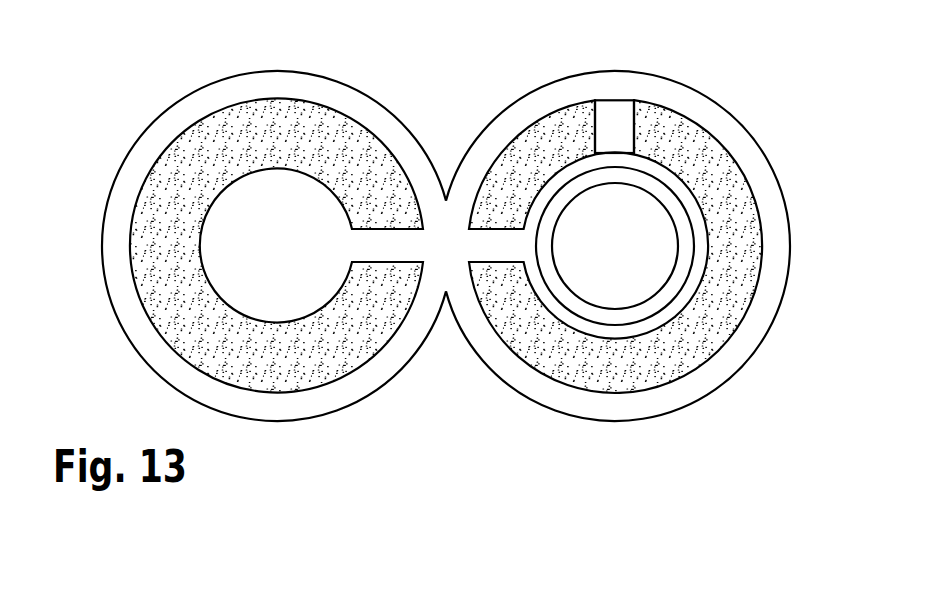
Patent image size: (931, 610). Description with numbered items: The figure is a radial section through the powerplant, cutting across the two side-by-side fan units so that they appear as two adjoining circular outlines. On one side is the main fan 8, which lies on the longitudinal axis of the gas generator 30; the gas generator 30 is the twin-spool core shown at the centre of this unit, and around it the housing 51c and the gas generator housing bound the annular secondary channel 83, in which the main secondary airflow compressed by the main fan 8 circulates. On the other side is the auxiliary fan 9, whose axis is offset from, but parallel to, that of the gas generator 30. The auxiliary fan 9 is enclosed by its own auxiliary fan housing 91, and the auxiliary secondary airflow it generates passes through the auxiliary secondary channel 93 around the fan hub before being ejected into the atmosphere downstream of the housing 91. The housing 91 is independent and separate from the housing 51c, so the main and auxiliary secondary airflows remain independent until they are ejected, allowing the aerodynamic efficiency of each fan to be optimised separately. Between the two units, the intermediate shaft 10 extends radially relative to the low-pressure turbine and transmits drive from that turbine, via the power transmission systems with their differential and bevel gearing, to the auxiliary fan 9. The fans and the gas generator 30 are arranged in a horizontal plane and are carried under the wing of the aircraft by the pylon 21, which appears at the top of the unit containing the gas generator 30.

The main fan 8 is at (725, 395).
The auxiliary fan 9 is at (338, 422).
The intermediate shaft 10 is at (442, 245).
The pylon 21 is at (620, 117).
The gas generator 30 is at (622, 232).
The housing 51c is at (593, 400).
The secondary channel 83 is at (673, 128).
The auxiliary fan housing 91 is at (272, 402).
The auxiliary secondary channel 93 is at (347, 157).